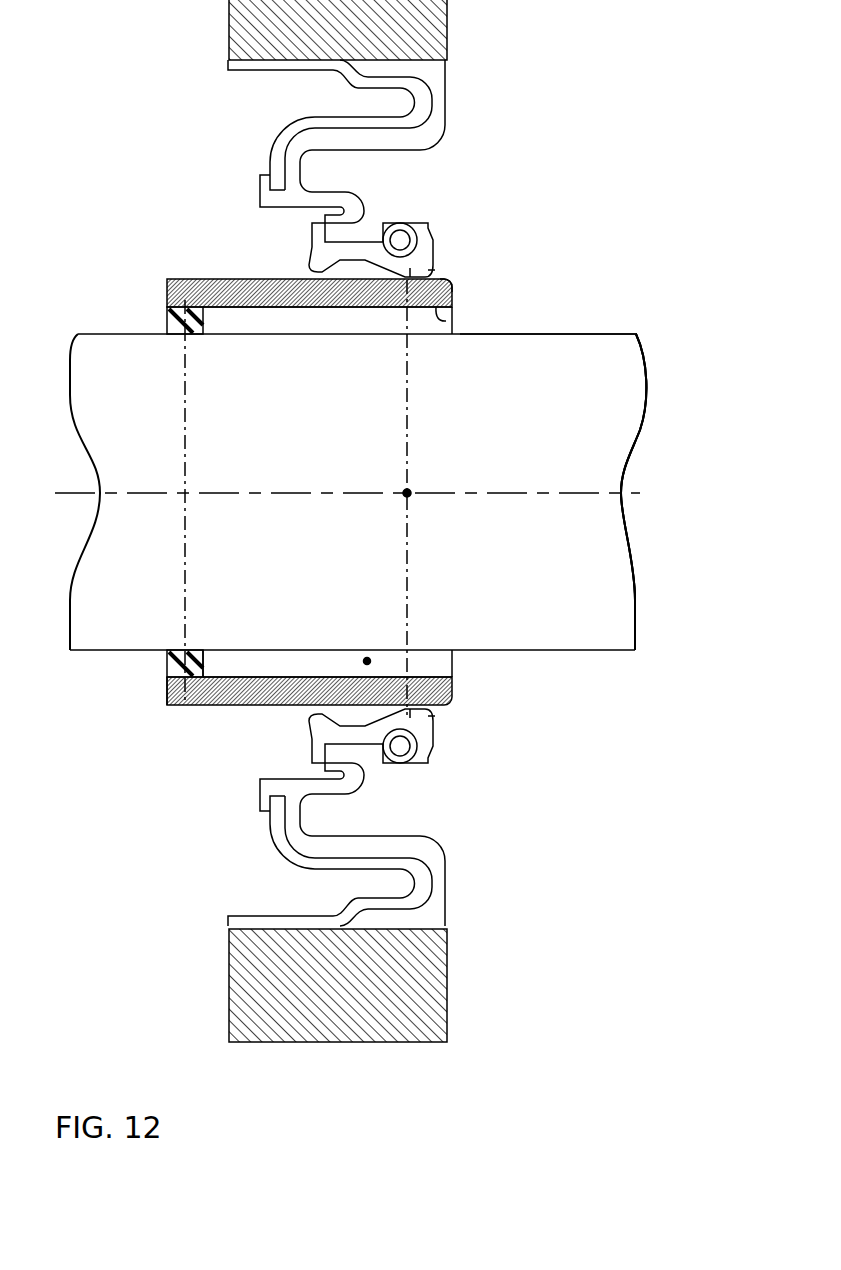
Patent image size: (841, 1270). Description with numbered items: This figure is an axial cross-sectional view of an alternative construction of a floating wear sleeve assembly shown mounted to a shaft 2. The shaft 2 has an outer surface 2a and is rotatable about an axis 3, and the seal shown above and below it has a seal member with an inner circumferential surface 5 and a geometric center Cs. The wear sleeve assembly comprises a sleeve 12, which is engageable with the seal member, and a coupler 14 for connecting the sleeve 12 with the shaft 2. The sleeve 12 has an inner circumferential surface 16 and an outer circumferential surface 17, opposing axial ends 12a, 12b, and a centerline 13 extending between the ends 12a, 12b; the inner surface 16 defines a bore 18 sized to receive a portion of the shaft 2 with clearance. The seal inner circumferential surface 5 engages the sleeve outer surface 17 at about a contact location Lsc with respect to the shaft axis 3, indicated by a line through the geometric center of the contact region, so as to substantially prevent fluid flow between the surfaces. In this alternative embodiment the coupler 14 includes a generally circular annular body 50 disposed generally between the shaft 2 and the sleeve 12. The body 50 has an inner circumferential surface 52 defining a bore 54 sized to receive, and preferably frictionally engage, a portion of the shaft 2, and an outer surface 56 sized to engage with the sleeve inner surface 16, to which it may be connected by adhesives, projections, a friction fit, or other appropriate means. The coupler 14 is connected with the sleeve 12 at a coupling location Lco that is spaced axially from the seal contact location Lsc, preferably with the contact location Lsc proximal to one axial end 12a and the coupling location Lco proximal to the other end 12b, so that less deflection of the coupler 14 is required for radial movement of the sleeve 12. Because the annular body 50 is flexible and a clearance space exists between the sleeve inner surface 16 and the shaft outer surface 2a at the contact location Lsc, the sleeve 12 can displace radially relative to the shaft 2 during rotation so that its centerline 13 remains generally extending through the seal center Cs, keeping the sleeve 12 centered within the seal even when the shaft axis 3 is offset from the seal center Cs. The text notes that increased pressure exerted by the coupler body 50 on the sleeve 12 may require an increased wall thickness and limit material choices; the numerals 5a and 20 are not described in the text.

The shaft 2 is at (640, 375).
The shaft outer surface 2a is at (591, 334).
The shaft axis 3 is at (628, 489).
The sleeve centerline 13 is at (633, 492).
The seal inner circumferential surface 5 is at (257, 670).
The sleeve surface 5a is at (367, 660).
The sleeve 12 is at (290, 288).
The sleeve axial end 12a is at (453, 293).
The sleeve axial end 12b is at (165, 691).
The coupler 14 is at (156, 310).
The sleeve inner circumferential surface 16 is at (349, 313).
The sleeve outer circumferential surface 17 is at (276, 275).
The bore 18 is at (446, 321).
The lower seal 20 is at (364, 716).
The annular body 50 is at (146, 670).
The inner circumferential surface 52 is at (192, 650).
The bore 54 is at (197, 333).
The outer surface 56 is at (205, 706).
The coupling location Lco is at (189, 464).
The seal contact location Lsc is at (412, 394).
The seal member geometric center Cs is at (410, 490).